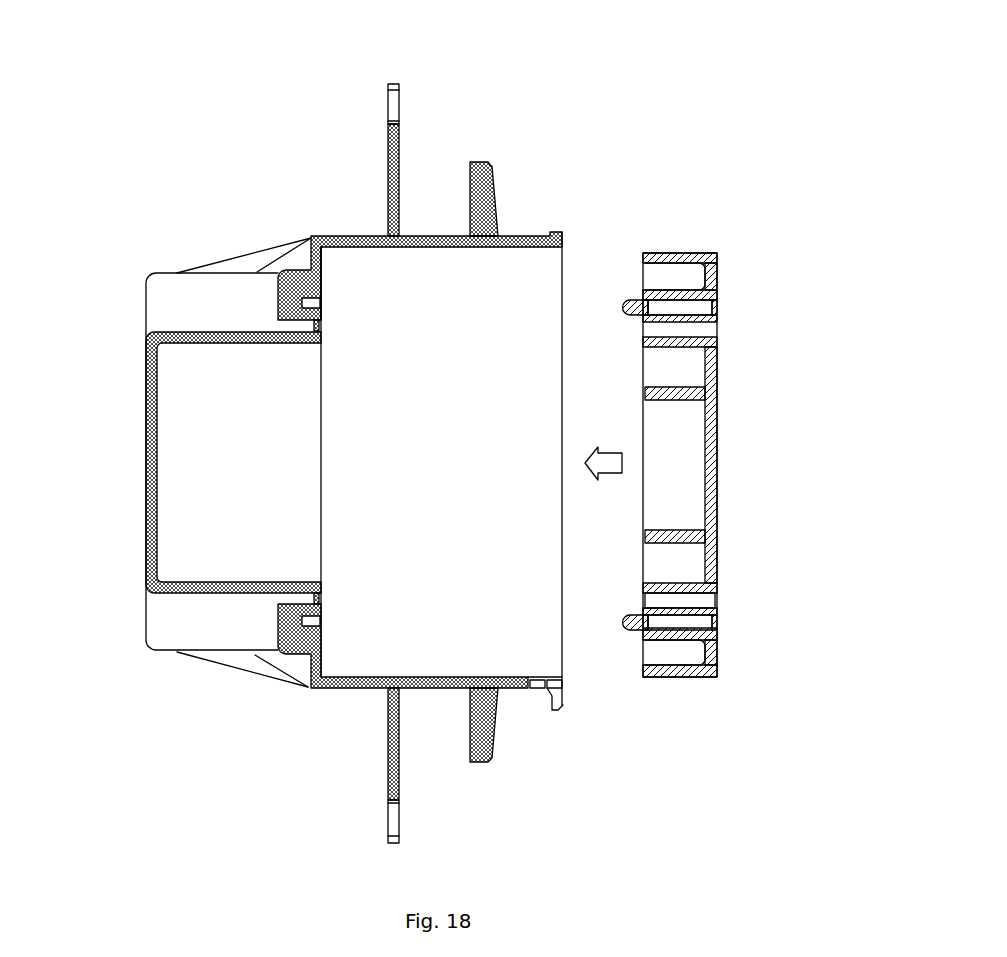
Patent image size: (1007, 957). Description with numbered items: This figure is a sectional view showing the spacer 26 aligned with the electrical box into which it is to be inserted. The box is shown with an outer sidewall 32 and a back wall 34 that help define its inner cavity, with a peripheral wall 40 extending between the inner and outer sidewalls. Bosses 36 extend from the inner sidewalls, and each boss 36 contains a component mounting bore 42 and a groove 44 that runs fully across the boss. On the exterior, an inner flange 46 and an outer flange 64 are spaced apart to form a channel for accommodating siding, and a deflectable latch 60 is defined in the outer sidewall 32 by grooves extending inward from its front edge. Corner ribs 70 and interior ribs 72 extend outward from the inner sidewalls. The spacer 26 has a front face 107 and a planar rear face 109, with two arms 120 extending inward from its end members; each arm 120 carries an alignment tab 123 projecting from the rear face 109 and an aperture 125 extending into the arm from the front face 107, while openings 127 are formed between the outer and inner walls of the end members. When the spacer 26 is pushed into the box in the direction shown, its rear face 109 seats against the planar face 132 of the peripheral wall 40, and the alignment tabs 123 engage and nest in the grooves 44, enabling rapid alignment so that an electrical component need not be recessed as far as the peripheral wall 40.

The spacer 26 is at (717, 678).
The outer sidewall 32 is at (337, 535).
The back wall 34 is at (152, 427).
The boss 36 is at (280, 624).
The peripheral wall 40 is at (322, 272).
The component mounting bore 42 is at (313, 325).
The groove 44 is at (302, 303).
The inner flange 46 is at (395, 84).
The deflectable latch 60 is at (557, 708).
The outer flange 64 is at (481, 162).
The corner rib 70 is at (248, 672).
The interior rib 72 is at (283, 668).
The front face 107 is at (700, 510).
The rear face 109 is at (645, 497).
The arm 120 is at (705, 602).
The alignment tab 123 is at (625, 306).
The aperture 125 is at (705, 621).
The opening 127 is at (668, 650).
The planar face 132 is at (322, 650).